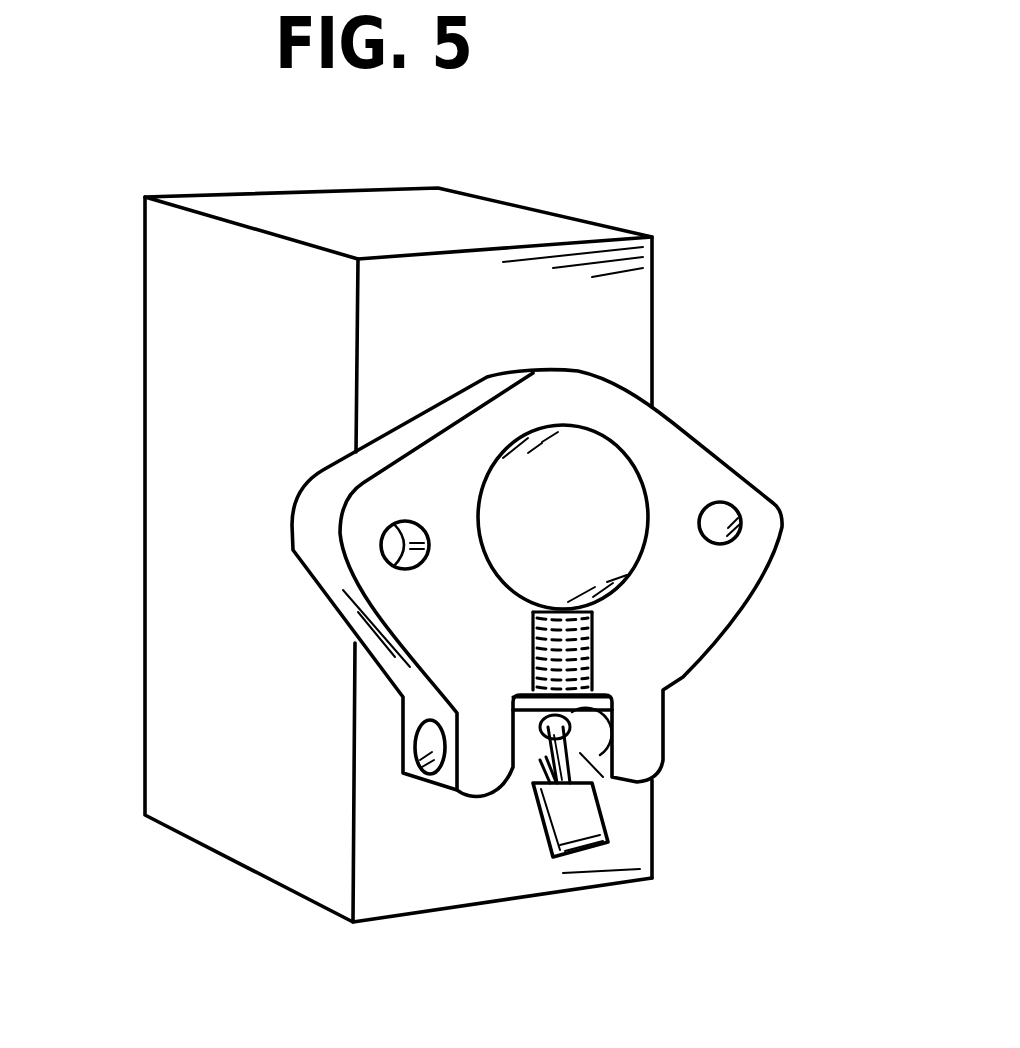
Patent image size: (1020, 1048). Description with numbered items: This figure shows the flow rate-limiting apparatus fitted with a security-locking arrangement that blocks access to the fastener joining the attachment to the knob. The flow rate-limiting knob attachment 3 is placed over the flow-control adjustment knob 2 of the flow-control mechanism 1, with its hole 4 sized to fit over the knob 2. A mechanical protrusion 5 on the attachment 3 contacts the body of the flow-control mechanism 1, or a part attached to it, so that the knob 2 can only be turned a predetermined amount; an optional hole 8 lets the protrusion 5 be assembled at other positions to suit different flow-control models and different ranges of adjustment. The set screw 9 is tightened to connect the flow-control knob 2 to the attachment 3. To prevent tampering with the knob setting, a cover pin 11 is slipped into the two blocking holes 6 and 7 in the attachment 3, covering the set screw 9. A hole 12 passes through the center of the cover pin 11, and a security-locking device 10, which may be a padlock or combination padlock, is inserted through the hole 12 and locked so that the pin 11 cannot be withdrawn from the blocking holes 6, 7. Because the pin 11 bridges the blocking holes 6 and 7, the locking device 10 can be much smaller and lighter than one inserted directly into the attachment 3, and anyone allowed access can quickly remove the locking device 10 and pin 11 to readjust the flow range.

The flow-control mechanism 1 is at (645, 235).
The flow-control adjustment knob 2 is at (565, 460).
The flow rate-limiting knob attachment 3 is at (680, 680).
The hole 4 is at (633, 462).
The mechanical protrusion 5 is at (718, 523).
The blocking hole 6 is at (440, 737).
The blocking hole 7 is at (613, 740).
The optional hole 8 is at (381, 545).
The set screw 9 is at (595, 643).
The security-locking device 10 is at (603, 808).
The cover pin 11 is at (535, 745).
The hole 12 is at (612, 703).